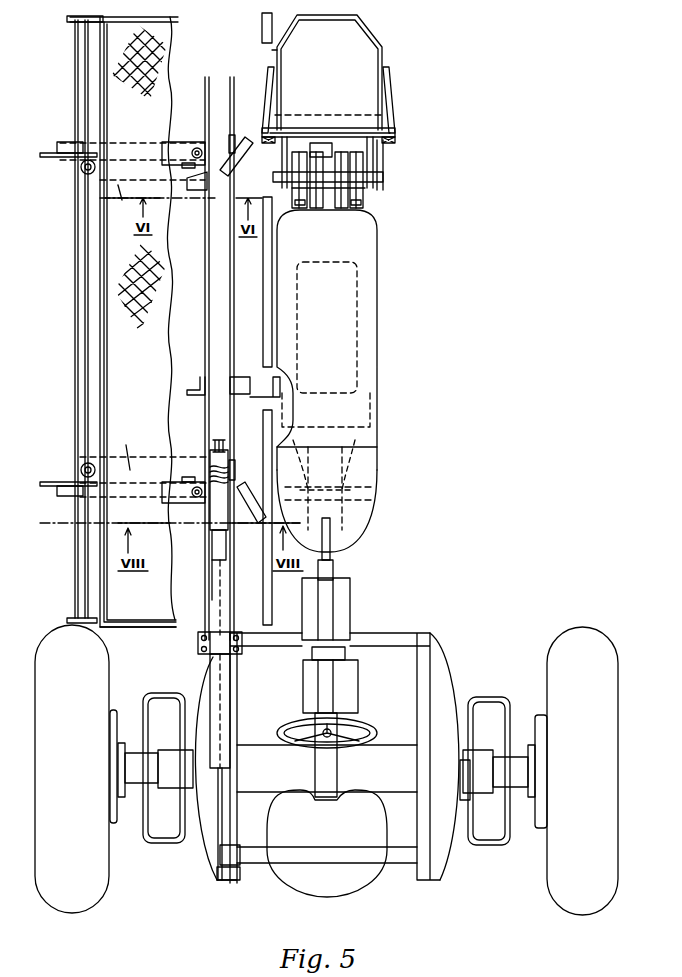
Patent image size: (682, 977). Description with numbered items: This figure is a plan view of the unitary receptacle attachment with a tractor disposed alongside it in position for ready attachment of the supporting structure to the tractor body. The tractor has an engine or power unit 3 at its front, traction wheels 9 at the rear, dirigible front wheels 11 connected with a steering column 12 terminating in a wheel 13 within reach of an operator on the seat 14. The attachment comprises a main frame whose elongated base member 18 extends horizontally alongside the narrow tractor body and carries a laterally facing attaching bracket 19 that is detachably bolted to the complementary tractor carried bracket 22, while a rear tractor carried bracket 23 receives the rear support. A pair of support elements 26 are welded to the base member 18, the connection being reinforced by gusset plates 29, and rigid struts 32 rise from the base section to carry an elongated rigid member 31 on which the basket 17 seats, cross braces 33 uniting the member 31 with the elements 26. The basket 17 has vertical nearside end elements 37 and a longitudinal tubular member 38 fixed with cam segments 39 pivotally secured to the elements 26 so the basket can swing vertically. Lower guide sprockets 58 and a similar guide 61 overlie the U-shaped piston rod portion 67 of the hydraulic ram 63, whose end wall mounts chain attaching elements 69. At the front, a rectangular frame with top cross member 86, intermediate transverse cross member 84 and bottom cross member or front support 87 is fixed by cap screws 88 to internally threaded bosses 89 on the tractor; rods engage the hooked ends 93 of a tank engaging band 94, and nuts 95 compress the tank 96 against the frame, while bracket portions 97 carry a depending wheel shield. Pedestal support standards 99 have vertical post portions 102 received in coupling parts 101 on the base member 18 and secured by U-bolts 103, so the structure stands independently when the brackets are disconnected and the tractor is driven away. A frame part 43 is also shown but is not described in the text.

The engine or power unit 3 is at (360, 330).
The traction wheels 9 is at (40, 665).
The dirigible front wheels 11 is at (366, 198).
The steering column 12 is at (330, 620).
The steering wheel 13 is at (360, 735).
The seat 14 is at (295, 882).
The basket 17 is at (156, 625).
The base section or member 18 is at (208, 293).
The attaching bracket 19 is at (198, 388).
The tractor carried bracket or attachment means 22 is at (254, 397).
The tractor carried bracket or attachment means 23 is at (212, 596).
The support members or elements 26 is at (112, 214).
The gusset plates 29 is at (206, 186).
The elongated rigid member 31 is at (262, 22).
The rigid struts 32 is at (235, 165).
The cross braces 33 is at (93, 190).
The vertical nearside end elements 37 is at (70, 19).
The longitudinal tubular member 38 is at (76, 270).
The cam segments 39 is at (81, 166).
The screen panel frame 43 is at (110, 372).
The sprockets 58 is at (232, 140).
The guide 61 is at (210, 460).
The reciprocable hydraulic ram 63 is at (230, 740).
The U-shaped piston rod portion 67 is at (233, 592).
The cable or chain attaching elements 69 is at (219, 440).
The transverse cross member 84 is at (396, 128).
The top cross member 86 is at (349, 130).
The bottom cross member or front support 87 is at (384, 177).
The cap screws 88 is at (320, 208).
The internally threaded bosses 89 is at (299, 208).
The hooked ends 93 is at (270, 68).
The tank engaging band 94 is at (272, 51).
The nuts 95 is at (264, 137).
The tank 96 is at (380, 56).
The bracket portions 97 is at (384, 160).
The support standards 99 is at (65, 142).
The coupling parts 101 is at (175, 148).
The vertical post portions 102 is at (197, 147).
The bracket components or U-bolts 103 is at (202, 142).